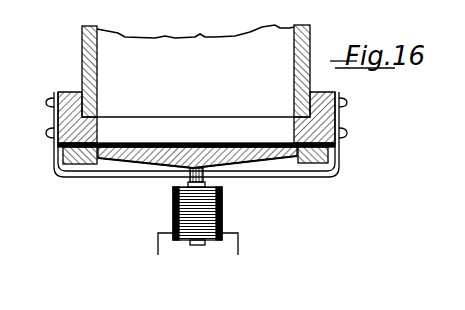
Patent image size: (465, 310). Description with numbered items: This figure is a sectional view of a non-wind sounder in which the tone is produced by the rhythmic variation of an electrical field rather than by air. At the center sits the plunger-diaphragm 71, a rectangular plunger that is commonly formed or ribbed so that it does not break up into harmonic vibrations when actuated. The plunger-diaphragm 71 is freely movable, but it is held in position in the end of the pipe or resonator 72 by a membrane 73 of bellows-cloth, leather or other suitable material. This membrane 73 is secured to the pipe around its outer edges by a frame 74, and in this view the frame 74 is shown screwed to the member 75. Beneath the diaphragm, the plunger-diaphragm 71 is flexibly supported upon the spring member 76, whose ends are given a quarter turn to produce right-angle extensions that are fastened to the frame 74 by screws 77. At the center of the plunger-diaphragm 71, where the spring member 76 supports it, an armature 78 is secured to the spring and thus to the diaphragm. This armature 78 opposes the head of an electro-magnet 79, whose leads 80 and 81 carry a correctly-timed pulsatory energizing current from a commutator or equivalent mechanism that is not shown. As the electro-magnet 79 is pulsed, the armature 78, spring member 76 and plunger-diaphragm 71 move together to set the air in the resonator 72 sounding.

The plunger-diaphragm 71 is at (283, 167).
The pipe or resonator 72 is at (310, 42).
The membrane 73 is at (217, 143).
The frame 74 is at (78, 102).
The member 75 is at (327, 168).
The spring member 76 is at (103, 178).
The screws 77 is at (48, 140).
The armature 78 is at (205, 182).
The electro-magnet 79 is at (225, 220).
The lead 80 is at (158, 237).
The lead 81 is at (240, 243).